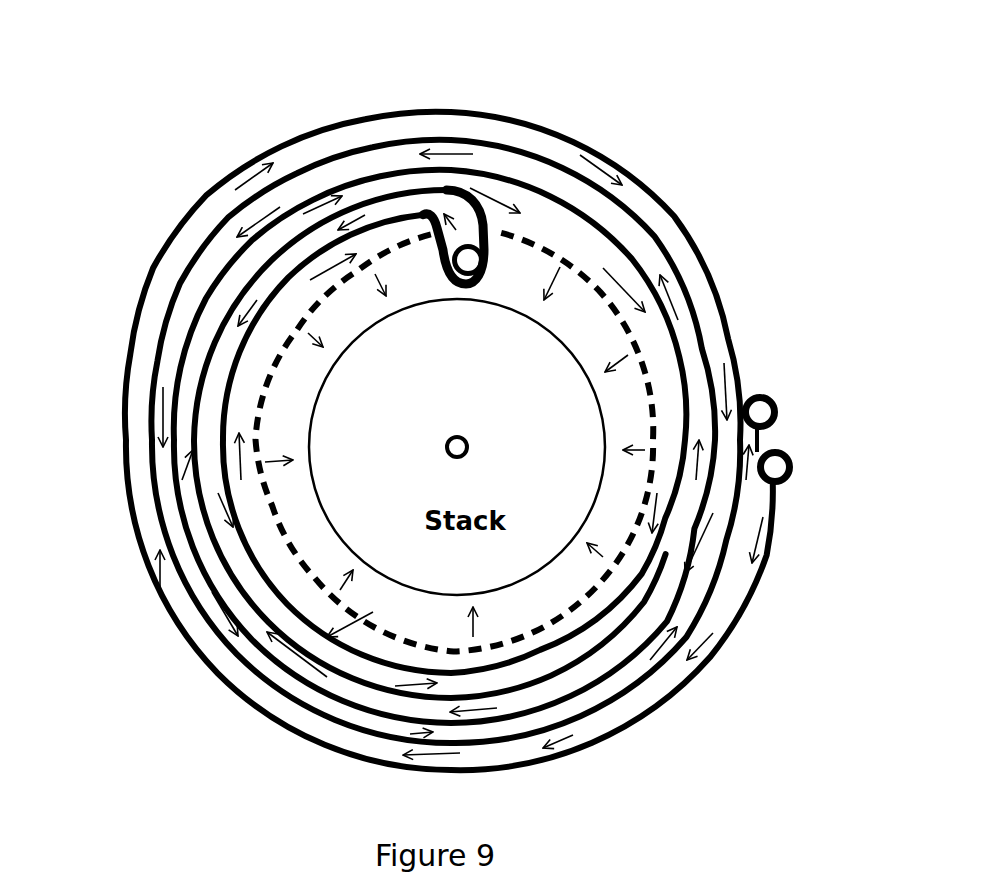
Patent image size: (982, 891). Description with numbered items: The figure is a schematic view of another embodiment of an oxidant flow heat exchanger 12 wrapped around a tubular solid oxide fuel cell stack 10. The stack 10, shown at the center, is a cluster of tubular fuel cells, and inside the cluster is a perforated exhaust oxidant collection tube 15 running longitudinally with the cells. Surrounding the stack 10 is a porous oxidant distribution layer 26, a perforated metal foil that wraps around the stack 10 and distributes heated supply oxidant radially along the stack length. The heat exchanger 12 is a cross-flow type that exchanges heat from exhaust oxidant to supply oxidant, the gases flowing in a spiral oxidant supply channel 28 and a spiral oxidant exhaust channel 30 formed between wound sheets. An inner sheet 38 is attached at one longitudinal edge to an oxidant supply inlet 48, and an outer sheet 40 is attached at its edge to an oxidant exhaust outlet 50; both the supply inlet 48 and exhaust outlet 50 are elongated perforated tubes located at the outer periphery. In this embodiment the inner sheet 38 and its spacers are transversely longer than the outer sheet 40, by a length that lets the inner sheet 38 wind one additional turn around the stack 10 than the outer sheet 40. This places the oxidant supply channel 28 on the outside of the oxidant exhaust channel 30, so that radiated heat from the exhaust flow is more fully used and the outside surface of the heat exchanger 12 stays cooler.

The solid oxide fuel cell stack 10 is at (337, 540).
The oxidant flow heat exchanger 12 is at (607, 748).
The perforated exhaust oxidant collection tube 15 is at (438, 447).
The porous oxidant distribution layer 26 is at (568, 262).
The oxidant supply channel 28 is at (518, 212).
The oxidant exhaust channel 30 is at (384, 208).
The inner sheet 38 is at (777, 560).
The outer sheet 40 is at (672, 612).
The oxidant supply inlet 48 is at (793, 462).
The oxidant exhaust outlet 50 is at (770, 393).